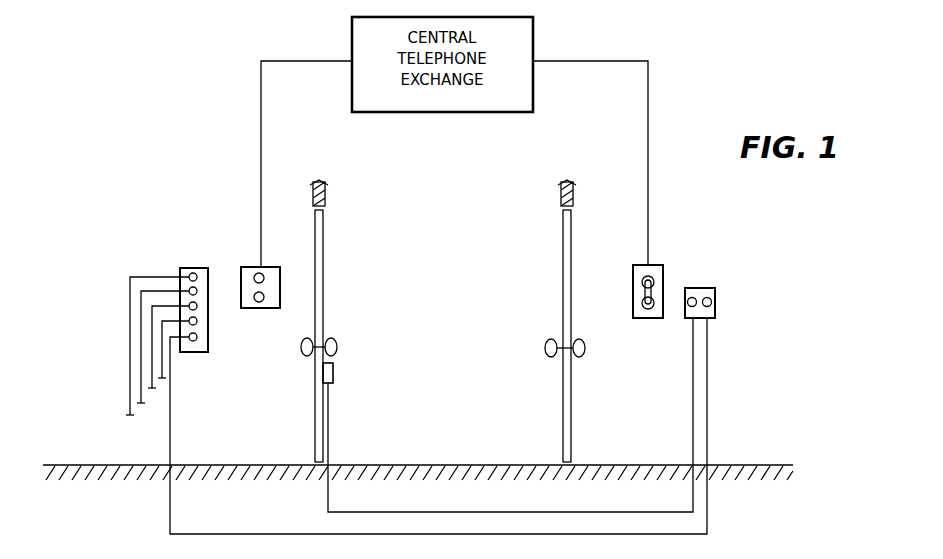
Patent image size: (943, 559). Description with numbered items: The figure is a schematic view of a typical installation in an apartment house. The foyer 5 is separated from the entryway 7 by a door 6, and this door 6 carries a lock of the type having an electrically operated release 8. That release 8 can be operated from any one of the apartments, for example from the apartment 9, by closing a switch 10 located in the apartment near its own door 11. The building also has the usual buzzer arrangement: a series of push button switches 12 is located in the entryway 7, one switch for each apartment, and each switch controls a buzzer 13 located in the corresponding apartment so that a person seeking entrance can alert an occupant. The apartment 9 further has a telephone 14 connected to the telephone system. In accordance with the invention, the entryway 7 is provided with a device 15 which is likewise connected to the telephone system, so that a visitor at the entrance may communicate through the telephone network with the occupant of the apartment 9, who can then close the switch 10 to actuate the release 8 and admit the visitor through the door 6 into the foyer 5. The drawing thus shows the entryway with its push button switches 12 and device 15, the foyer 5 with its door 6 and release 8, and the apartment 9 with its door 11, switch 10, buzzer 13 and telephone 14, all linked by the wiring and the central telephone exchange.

The foyer 5 is at (458, 254).
The door 6 is at (326, 278).
The entryway 7 is at (128, 449).
The electrically operated release 8 is at (334, 370).
The apartment 9 is at (748, 332).
The switch 10 is at (690, 288).
The door 11 is at (573, 387).
The push button switches 12 is at (188, 302).
The buzzer 13 is at (712, 290).
The telephone 14 is at (638, 265).
The device 15 is at (244, 263).